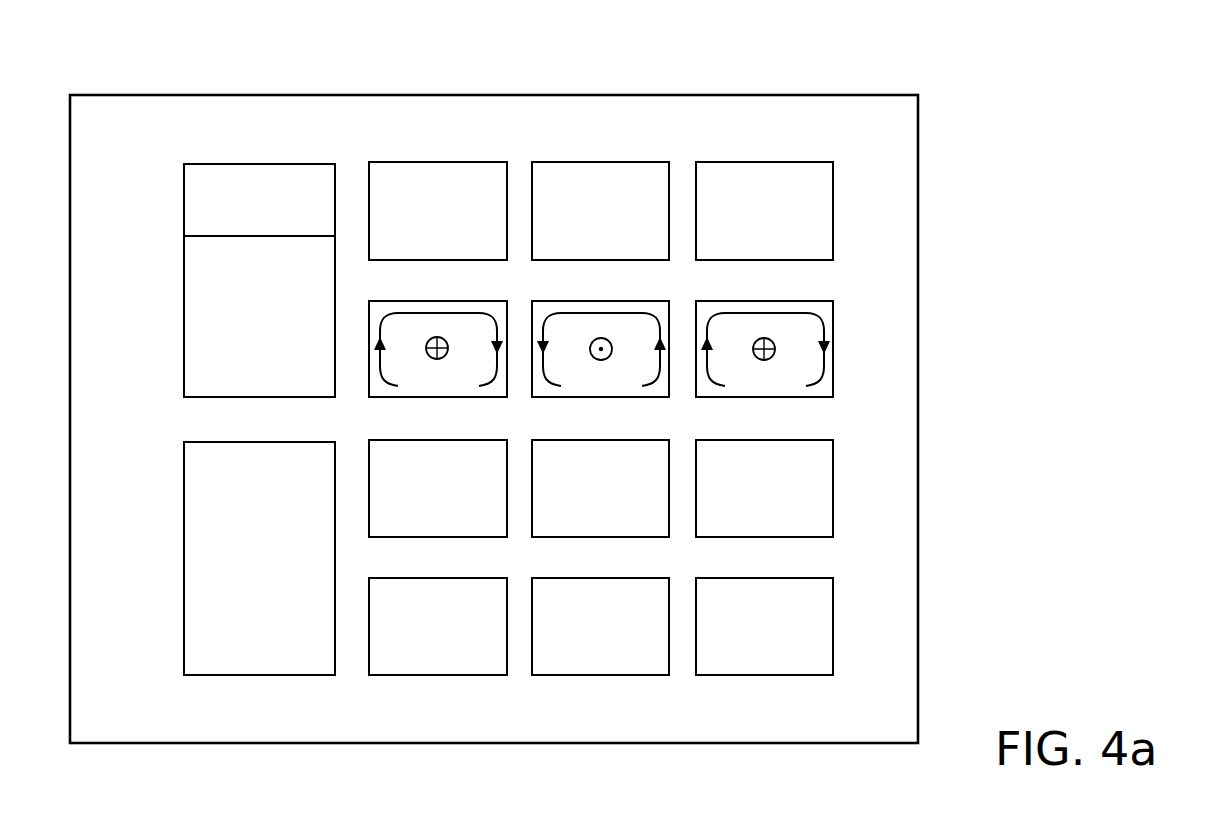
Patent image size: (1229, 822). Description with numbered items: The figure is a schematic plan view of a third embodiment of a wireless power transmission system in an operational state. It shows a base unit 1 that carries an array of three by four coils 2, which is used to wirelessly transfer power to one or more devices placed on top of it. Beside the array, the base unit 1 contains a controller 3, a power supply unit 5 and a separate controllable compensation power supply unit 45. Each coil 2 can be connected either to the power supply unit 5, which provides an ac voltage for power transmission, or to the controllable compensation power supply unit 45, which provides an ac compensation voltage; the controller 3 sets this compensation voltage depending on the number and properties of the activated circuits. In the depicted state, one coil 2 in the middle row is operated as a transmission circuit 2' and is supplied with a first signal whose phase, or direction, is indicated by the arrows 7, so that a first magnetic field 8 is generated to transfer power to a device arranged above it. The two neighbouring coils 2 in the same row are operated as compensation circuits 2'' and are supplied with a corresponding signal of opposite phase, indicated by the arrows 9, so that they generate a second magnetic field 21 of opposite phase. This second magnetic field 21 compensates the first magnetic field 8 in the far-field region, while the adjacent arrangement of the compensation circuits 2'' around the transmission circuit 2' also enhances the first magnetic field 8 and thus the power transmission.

The base unit 1 is at (118, 63).
The coil 2 is at (601, 420).
The transmission circuit 2' is at (600, 332).
The compensation circuit 2'' is at (601, 332).
The controller 3 is at (184, 558).
The power supply unit 5 is at (184, 317).
The controllable compensation power supply unit 45 is at (184, 200).
The arrows indicating first direction 7 is at (549, 343).
The first magnetic field 8 is at (609, 357).
The arrows indicating opposite direction 9 is at (385, 343).
The second magnetic field 21 is at (445, 356).